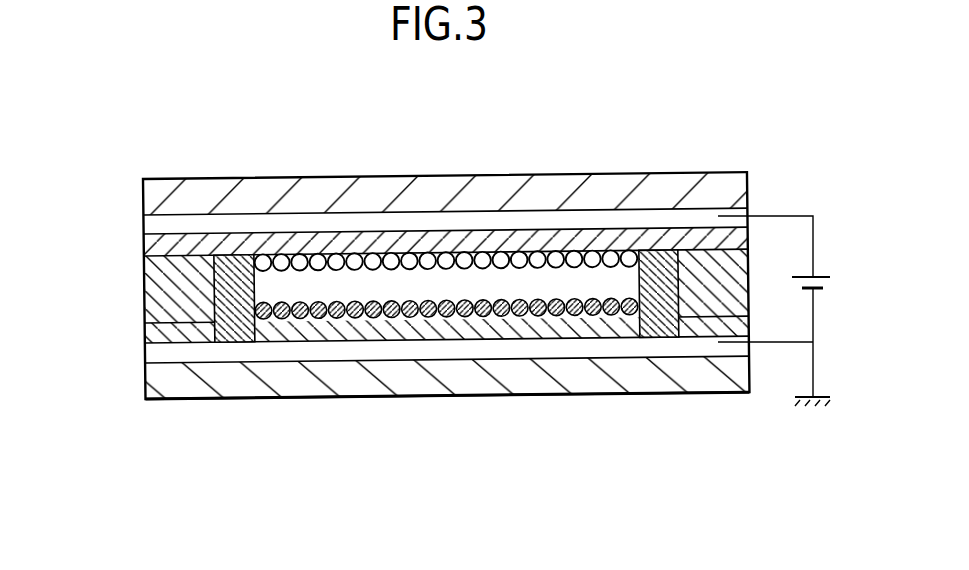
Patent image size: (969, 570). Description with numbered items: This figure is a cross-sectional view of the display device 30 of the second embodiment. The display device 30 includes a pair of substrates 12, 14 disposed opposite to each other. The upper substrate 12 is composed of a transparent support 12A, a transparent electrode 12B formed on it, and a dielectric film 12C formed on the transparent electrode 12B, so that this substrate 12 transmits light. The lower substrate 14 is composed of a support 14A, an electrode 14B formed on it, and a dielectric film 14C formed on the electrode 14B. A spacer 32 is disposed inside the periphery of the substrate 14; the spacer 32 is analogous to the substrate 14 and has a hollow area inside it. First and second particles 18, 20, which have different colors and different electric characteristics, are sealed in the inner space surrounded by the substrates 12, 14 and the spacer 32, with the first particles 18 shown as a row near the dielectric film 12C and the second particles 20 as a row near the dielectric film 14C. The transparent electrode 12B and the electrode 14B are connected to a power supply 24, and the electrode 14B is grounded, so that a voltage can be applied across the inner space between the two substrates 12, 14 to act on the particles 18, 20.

The display device 30 is at (458, 137).
The substrate 12 is at (68, 185).
The transparent support 12A is at (146, 197).
The transparent electrode 12B is at (146, 225).
The dielectric film 12C is at (146, 250).
The substrate 14 is at (68, 317).
The support 14A is at (148, 392).
The electrode 14B is at (146, 357).
The dielectric film 14C is at (193, 333).
The first particles 18 is at (316, 257).
The second particles 20 is at (314, 320).
The spacer 32 is at (207, 288).
The power supply 24 is at (828, 284).